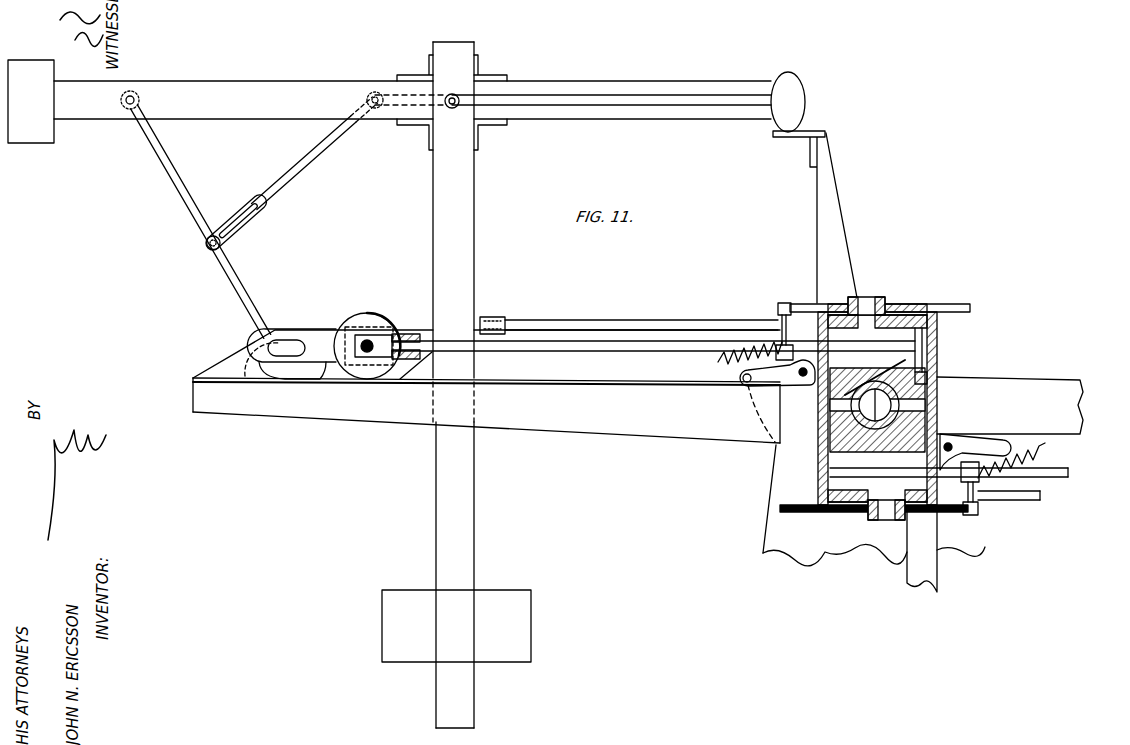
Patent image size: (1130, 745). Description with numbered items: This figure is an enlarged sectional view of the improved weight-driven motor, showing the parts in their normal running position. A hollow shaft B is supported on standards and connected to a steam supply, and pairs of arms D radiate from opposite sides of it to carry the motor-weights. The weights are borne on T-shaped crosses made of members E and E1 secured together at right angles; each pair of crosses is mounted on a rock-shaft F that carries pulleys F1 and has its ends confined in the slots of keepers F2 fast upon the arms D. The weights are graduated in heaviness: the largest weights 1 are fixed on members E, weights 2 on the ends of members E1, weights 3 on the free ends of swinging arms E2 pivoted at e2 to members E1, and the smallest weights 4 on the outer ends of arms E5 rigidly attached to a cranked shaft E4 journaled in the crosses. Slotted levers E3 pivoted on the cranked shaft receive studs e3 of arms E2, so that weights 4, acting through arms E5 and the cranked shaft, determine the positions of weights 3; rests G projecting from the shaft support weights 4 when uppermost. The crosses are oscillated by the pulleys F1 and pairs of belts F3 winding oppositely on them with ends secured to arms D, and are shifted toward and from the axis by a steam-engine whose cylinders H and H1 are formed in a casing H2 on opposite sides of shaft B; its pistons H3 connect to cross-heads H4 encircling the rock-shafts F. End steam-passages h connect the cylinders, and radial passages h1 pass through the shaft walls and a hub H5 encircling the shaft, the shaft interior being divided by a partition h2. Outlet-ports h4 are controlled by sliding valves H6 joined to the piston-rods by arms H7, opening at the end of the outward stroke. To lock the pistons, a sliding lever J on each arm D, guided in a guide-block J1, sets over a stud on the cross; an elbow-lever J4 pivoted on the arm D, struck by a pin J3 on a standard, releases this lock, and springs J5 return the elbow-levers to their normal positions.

The weight 1 is at (456, 626).
The weight 2 is at (31, 101).
The weight 3 is at (286, 348).
The weight 4 is at (788, 102).
The member of cross E is at (496, 252).
The member of cross E1 is at (243, 100).
The swinging arm E2 is at (190, 192).
The slotted lever E3 is at (312, 160).
The cranked shaft E4 is at (457, 96).
The arm E5 is at (665, 102).
The pivot e2 is at (134, 94).
The stud e3 is at (252, 215).
The arm D is at (638, 386).
The rock-shaft F is at (362, 355).
The pulley F1 is at (372, 315).
The keeper F2 is at (318, 329).
The belt F3 is at (393, 382).
The rest G is at (816, 205).
The cylinder H is at (893, 322).
The cylinder H1 is at (860, 500).
The casing H2 is at (937, 372).
The piston H3 is at (598, 345).
The cross-head H4 is at (405, 334).
The hub H5 is at (925, 372).
The sliding valve H6 is at (950, 304).
The arm H7 is at (784, 302).
The end steam-passage h is at (818, 430).
The radial passage h1 is at (828, 408).
The partition h2 is at (960, 386).
The outlet-port h4 is at (865, 297).
The sliding lever J is at (1027, 512).
The guide-block J1 is at (497, 317).
The pin J3 is at (748, 388).
The elbow-lever J4 is at (795, 374).
The spring J5 is at (715, 362).
The hollow shaft B is at (828, 452).